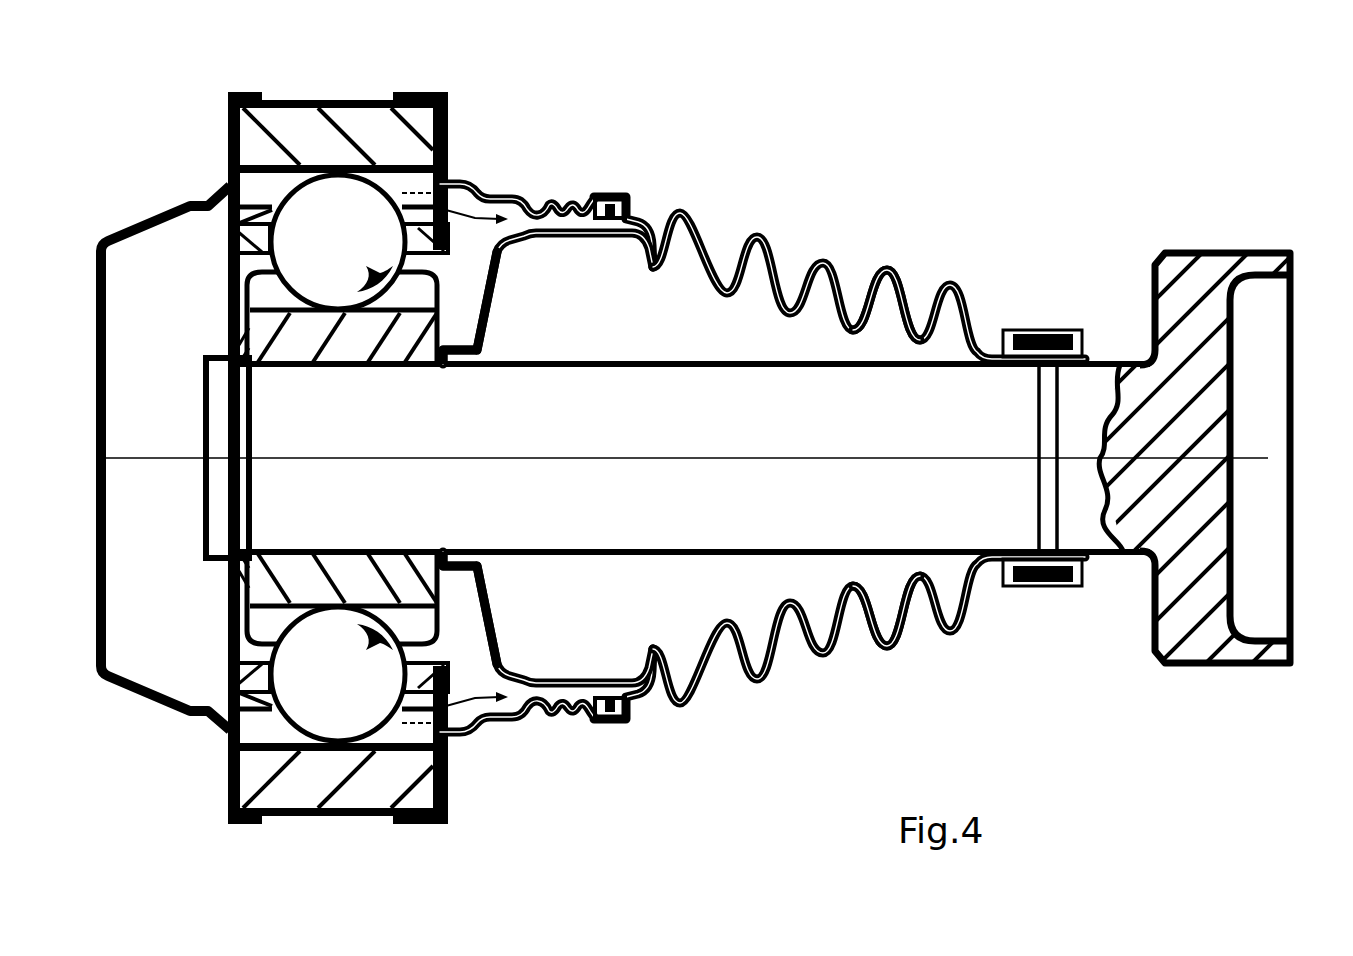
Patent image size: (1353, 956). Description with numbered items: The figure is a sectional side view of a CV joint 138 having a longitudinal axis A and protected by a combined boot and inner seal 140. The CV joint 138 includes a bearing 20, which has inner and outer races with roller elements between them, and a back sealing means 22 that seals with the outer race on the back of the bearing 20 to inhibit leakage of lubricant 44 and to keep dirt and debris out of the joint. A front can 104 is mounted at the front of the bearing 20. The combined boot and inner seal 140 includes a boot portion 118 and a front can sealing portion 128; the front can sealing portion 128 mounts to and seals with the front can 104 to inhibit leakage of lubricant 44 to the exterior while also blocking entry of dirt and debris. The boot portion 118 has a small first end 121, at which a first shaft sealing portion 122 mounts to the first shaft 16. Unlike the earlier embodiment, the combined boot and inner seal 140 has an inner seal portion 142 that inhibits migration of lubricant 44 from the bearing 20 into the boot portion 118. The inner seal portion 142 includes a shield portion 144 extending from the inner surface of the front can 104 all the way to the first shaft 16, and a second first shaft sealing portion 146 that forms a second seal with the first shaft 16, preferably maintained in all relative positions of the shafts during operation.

The first shaft 16 is at (974, 590).
The bearing 20 is at (315, 88).
The back sealing means 22 is at (134, 684).
The lubricant 44 is at (480, 200).
The front can 104 is at (420, 92).
The boot portion 118 is at (886, 274).
The first end 121 is at (1069, 318).
The first shaft sealing portion 122 is at (1013, 330).
The front can sealing portion 128 is at (583, 200).
The CV joint 138 is at (543, 158).
The combined boot and inner seal 140 is at (827, 238).
The inner seal portion 142 is at (497, 296).
The shield portion 144 is at (490, 330).
The second first shaft sealing portion 146 is at (453, 366).
The longitudinal axis A is at (1270, 457).